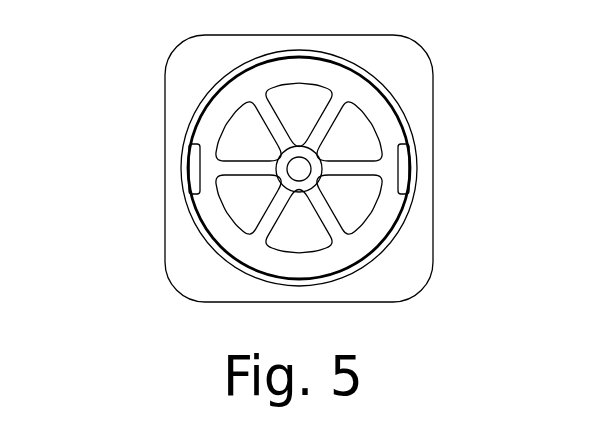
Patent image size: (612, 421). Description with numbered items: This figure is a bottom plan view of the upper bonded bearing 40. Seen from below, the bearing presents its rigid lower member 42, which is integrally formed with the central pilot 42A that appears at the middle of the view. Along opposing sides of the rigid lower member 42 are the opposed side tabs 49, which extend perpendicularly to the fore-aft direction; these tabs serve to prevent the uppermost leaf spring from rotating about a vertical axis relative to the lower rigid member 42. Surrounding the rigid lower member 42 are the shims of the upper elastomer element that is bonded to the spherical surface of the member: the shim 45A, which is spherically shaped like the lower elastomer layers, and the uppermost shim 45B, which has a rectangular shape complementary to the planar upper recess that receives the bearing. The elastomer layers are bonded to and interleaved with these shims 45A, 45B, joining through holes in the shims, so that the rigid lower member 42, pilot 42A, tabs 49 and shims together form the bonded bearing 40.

The upper bonded bearing 40 is at (147, 138).
The rigid lower member 42 is at (383, 113).
The pilot 42A is at (287, 180).
The shim 45A is at (404, 233).
The uppermost shim 45B is at (433, 200).
The side tabs 49 is at (400, 155).